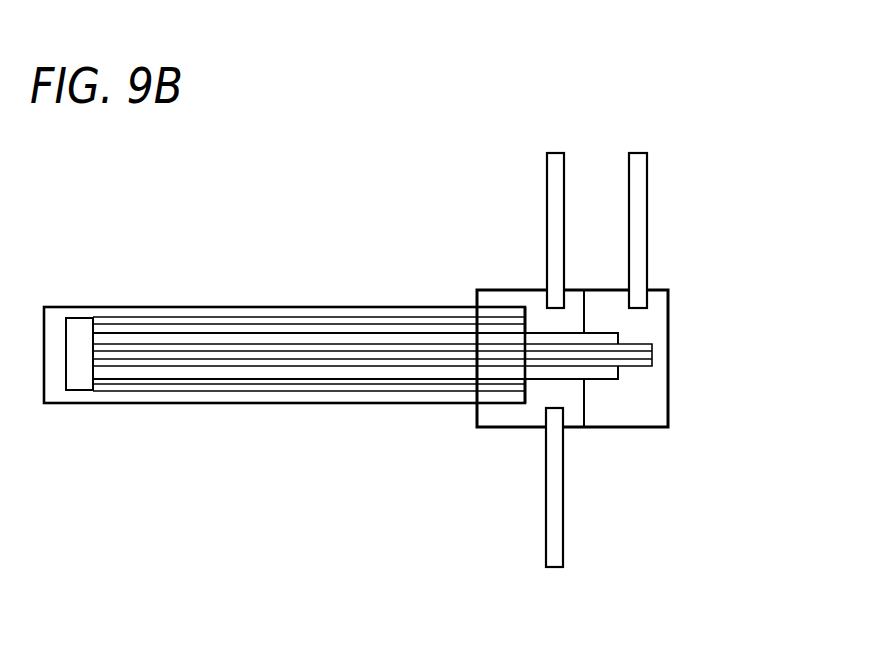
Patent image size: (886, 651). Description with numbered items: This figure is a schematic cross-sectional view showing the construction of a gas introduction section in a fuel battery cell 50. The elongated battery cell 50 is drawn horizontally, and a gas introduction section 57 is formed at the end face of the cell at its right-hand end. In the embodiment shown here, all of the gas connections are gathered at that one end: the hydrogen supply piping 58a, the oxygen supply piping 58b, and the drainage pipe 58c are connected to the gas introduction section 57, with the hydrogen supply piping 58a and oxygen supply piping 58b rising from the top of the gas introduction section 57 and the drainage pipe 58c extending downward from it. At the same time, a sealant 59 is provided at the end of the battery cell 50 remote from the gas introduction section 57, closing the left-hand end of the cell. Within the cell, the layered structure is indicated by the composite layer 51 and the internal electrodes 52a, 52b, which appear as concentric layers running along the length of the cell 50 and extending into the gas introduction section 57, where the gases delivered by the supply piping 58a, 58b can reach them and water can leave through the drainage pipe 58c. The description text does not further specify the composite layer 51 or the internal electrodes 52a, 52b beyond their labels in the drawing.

The fuel battery cell 50 is at (366, 294).
The composite layer 51 is at (161, 337).
The internal electrode 52a is at (301, 354).
The internal electrode 52b is at (241, 322).
The gas introduction section 57 is at (572, 412).
The hydrogen supply piping 58a is at (548, 173).
The oxygen supply piping 58b is at (645, 186).
The drainage pipe 58c is at (549, 546).
The sealant 59 is at (78, 377).